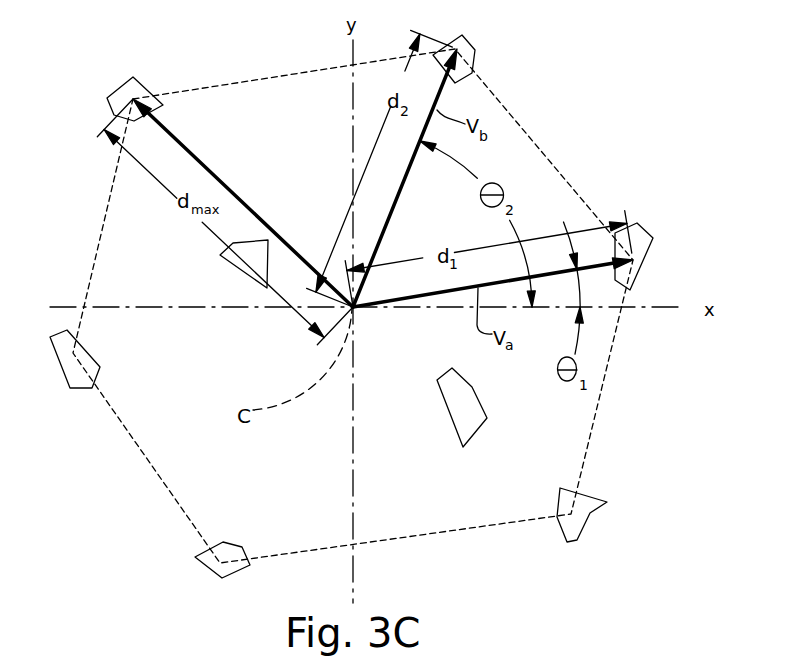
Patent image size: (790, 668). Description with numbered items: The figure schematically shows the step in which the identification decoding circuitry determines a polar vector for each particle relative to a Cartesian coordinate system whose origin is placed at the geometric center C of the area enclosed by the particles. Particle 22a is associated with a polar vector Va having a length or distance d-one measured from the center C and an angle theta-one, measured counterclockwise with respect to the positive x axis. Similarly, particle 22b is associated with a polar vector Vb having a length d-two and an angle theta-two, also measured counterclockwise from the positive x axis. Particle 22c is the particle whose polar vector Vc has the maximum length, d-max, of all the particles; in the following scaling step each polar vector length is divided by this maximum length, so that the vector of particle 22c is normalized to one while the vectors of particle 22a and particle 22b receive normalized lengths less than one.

The particle 22a is at (645, 250).
The particle 22b is at (472, 68).
The particle 22c is at (110, 110).